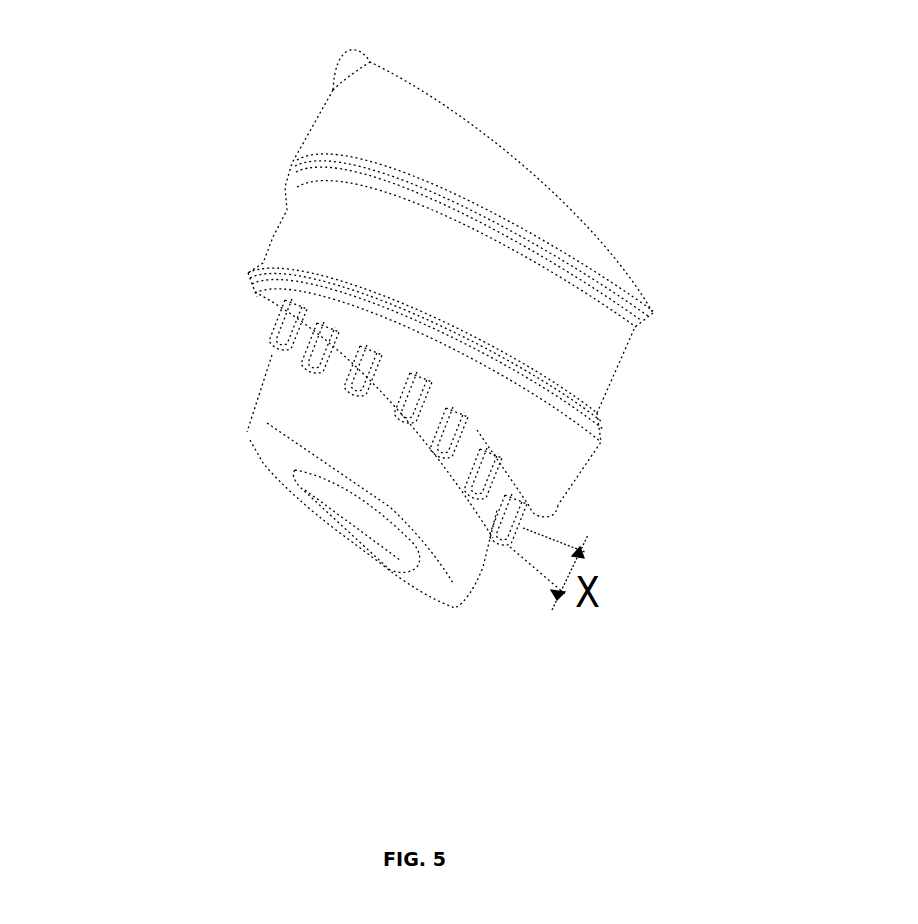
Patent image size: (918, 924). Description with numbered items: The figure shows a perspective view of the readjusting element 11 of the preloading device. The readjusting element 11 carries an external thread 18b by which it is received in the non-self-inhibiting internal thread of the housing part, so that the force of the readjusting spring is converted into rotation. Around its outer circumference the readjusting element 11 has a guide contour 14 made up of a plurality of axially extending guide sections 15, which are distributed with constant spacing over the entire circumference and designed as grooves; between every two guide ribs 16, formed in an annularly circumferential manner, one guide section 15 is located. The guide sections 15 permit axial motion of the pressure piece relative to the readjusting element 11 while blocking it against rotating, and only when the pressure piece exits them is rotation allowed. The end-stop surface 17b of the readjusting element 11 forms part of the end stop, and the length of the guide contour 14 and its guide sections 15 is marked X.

The readjusting element 11 is at (570, 212).
The external thread 18b is at (292, 165).
The end-stop surface 17b is at (560, 507).
The guide contour 14 is at (307, 369).
The axially extending guide section 15 is at (368, 392).
The guide rib 16 is at (345, 380).